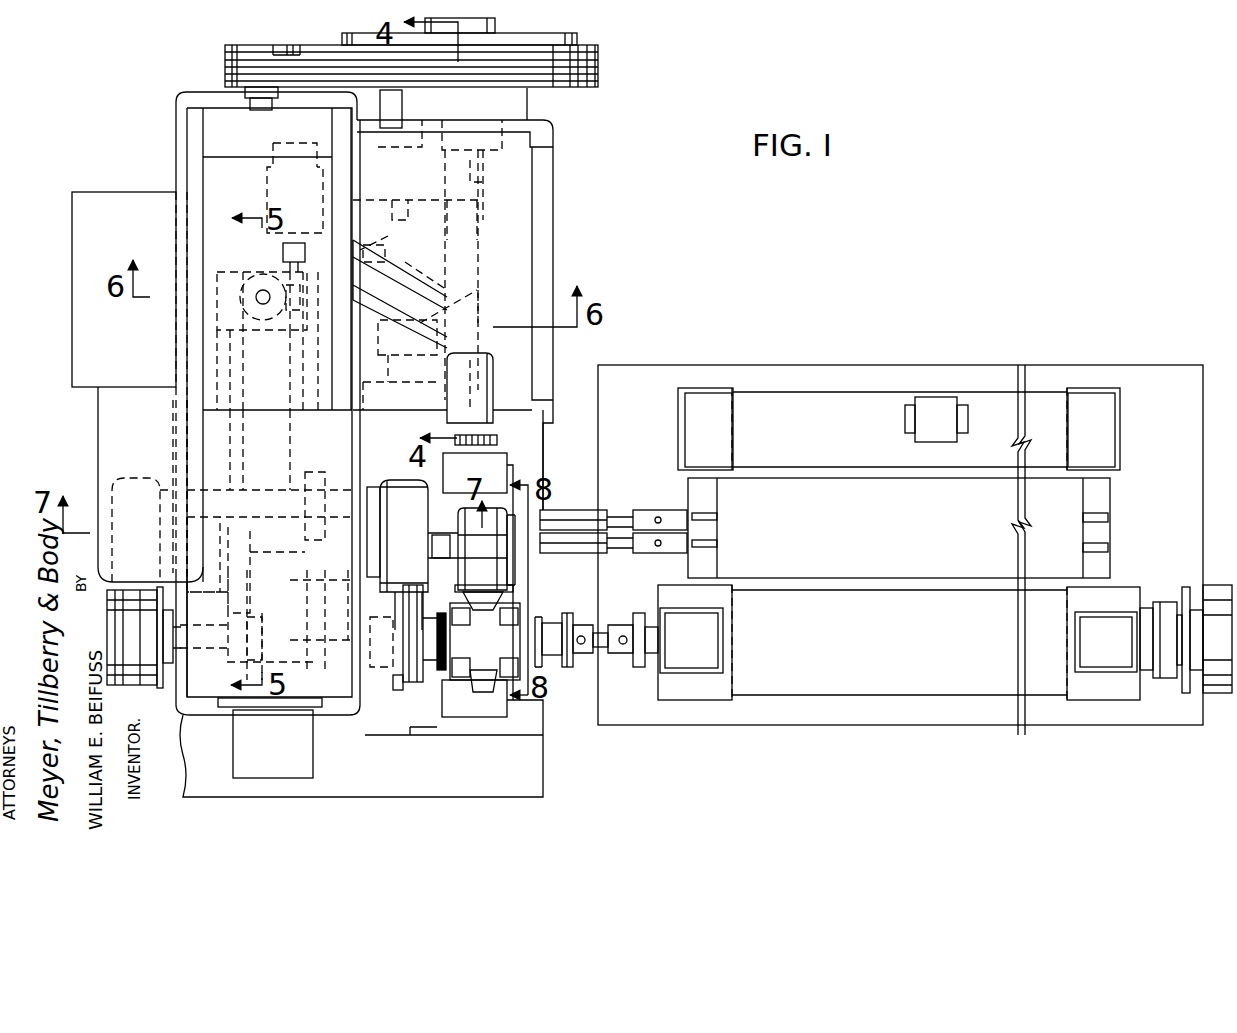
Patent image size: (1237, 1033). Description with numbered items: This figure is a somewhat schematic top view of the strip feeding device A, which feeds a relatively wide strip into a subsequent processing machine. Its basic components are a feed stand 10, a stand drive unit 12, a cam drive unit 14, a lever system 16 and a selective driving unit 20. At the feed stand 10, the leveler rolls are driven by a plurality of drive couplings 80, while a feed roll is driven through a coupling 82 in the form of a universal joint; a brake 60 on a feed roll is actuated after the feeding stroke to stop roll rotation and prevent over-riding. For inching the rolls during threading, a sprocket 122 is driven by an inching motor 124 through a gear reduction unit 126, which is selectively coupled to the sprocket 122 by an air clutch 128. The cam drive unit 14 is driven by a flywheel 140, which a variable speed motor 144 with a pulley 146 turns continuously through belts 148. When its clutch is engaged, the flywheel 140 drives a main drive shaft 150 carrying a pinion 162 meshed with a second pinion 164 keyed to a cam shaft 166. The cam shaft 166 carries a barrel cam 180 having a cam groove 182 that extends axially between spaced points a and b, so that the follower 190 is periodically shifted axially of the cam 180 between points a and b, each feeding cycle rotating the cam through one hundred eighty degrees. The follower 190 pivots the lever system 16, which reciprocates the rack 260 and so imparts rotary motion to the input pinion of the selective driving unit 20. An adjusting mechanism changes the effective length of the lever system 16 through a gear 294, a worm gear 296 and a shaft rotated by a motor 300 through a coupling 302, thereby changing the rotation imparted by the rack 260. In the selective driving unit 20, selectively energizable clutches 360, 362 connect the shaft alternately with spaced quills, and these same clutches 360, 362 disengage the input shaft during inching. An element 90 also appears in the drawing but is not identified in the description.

The feed stand 10 is at (987, 359).
The stand drive unit 12 is at (536, 469).
The cam drive unit 14 is at (560, 179).
The lever system 16 is at (213, 176).
The selective driving unit 20 is at (309, 682).
The brake 60 is at (1218, 668).
The drive couplings 80 is at (584, 510).
The coupling 82 is at (573, 626).
The spindle plate 90 is at (515, 597).
The sprocket 122 is at (441, 666).
The inching motor 124 is at (512, 525).
The gear reduction unit 126 is at (480, 652).
The air clutch 128 is at (395, 690).
The flywheel 140 is at (590, 47).
The variable speed motor 144 is at (262, 118).
The pulley 146 is at (270, 47).
The belts 148 is at (597, 72).
The main drive shaft 150 is at (470, 233).
The pinion 162 is at (478, 182).
The second pinion 164 is at (372, 238).
The cam shaft 166 is at (442, 355).
The barrel cam 180 is at (432, 275).
The cam groove 182 is at (445, 305).
The follower 190 is at (400, 294).
The rack 260 is at (283, 440).
The gear 294 is at (246, 307).
The worm gear 296 is at (292, 312).
The motor 300 is at (283, 190).
The coupling 302 is at (283, 262).
The clutch 360 is at (138, 485).
The clutch 362 is at (383, 478).
The point a is at (480, 323).
The point b is at (396, 232).
The strip feeding device A is at (712, 251).